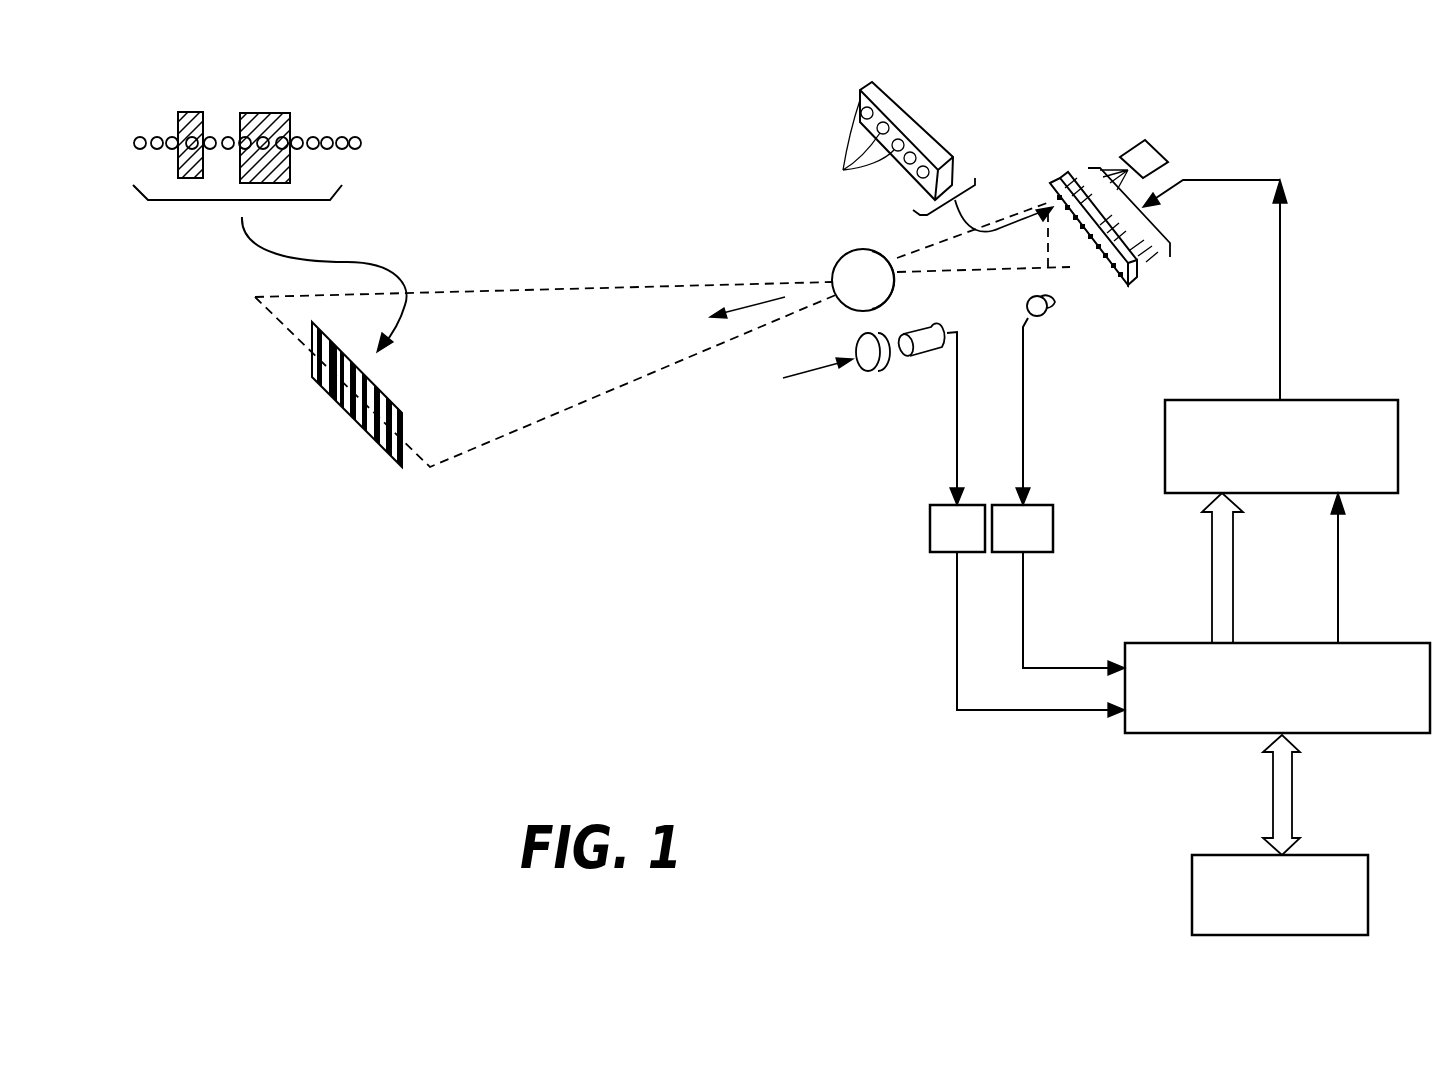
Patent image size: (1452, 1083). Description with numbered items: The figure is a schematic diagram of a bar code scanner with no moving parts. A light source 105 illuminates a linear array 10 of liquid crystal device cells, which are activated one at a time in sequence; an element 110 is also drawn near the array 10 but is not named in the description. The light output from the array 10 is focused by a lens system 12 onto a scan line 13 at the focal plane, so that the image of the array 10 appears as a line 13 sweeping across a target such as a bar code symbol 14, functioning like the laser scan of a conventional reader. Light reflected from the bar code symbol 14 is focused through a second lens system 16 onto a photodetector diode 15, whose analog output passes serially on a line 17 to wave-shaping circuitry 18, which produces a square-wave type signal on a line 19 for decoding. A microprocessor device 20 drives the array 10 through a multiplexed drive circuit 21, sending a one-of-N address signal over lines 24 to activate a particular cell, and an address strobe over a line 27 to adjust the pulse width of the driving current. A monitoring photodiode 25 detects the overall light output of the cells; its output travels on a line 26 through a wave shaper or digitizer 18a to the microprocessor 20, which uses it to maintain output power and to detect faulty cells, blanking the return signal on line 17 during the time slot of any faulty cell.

The linear array 10 is at (1053, 180).
The lens system 12 is at (847, 255).
The scan line 13 is at (325, 135).
The bar code symbol 14 is at (267, 99).
The photodetector diode 15 is at (880, 373).
The lens system 16 is at (863, 372).
The line 17 is at (955, 435).
The wave-shaping circuitry 18 is at (957, 528).
The wave shaper or digitizer 18a is at (1022, 528).
The line 19 is at (1045, 712).
The microprocessor device 20 is at (1348, 737).
The multiplexed drive circuit 21 is at (1308, 400).
The lines 24 is at (1212, 580).
The monitoring photodiode 25 is at (1030, 295).
The line 26 is at (1023, 422).
The line 27 is at (1343, 600).
The light source 105 is at (1157, 147).
The light source array 110 is at (923, 157).